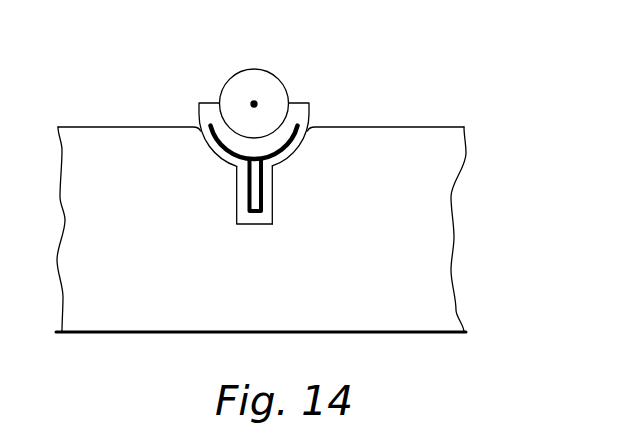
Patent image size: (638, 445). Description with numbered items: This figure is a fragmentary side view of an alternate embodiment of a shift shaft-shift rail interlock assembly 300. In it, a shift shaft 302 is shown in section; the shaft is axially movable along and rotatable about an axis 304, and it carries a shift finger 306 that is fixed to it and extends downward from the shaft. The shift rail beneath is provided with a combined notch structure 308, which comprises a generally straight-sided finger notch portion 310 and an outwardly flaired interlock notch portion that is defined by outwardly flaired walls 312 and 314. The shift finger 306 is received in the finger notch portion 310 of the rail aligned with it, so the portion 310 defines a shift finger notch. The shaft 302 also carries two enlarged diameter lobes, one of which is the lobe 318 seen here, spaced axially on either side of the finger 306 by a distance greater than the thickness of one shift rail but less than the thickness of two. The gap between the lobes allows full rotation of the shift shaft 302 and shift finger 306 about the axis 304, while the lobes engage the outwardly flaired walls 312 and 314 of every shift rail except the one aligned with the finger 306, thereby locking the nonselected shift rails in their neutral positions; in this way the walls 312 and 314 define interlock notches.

The shift shaft-shift rail interlock assembly 300 is at (466, 271).
The shift shaft 302 is at (234, 90).
The axis 304 is at (254, 104).
The shift finger 306 is at (255, 200).
The combined notch structure 308 is at (279, 210).
The finger notch portion 310 is at (240, 217).
The outwardly flaired wall 312 is at (198, 114).
The outwardly flaired wall 314 is at (312, 128).
The enlarged diameter lobe 318 is at (199, 108).